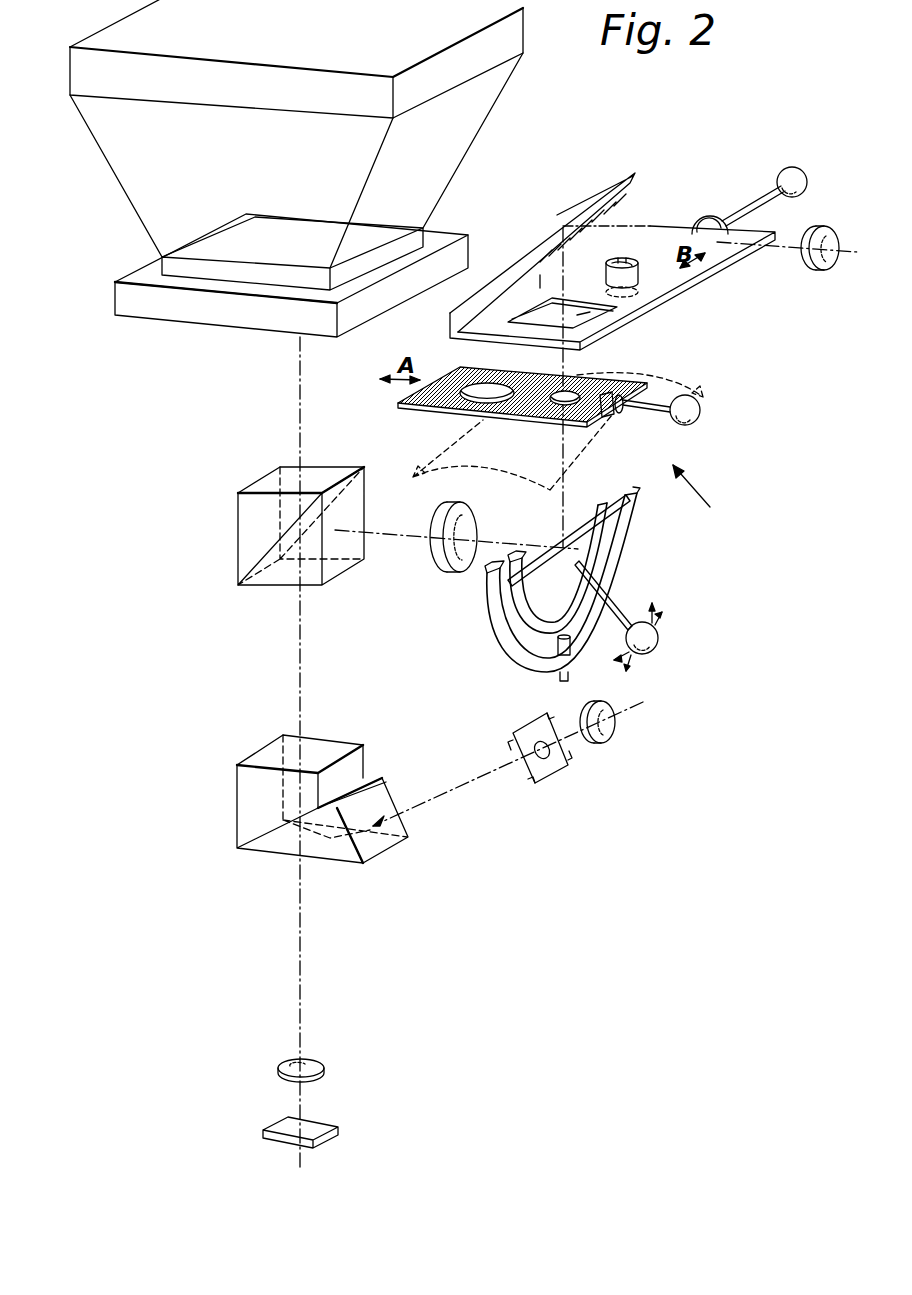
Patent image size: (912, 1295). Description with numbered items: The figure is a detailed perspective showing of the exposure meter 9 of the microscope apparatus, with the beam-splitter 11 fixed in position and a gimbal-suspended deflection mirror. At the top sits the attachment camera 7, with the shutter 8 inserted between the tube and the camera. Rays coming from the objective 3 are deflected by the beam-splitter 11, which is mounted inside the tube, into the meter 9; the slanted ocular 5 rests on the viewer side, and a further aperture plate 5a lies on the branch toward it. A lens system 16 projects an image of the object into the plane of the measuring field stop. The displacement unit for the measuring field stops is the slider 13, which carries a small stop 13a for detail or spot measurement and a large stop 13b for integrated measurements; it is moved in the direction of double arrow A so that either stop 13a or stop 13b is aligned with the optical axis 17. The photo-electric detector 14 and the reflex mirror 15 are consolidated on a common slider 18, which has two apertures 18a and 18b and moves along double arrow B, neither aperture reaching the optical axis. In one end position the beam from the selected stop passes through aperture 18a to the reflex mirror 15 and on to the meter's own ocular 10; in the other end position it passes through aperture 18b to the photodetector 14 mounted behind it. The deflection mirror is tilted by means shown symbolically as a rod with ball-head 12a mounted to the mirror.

The objective 3 is at (322, 1063).
The slanted ocular 5 is at (602, 747).
The aperture plate 5a is at (547, 772).
The attachment camera 7 is at (455, 72).
The shutter 8 is at (232, 312).
The exposure meter 9 is at (700, 500).
The ocular 10 is at (822, 270).
The beam-splitter 11 is at (257, 530).
The rod with ball-head 12a is at (653, 658).
The displacement unit 13 is at (540, 398).
The small stop 13a is at (573, 405).
The large stop 13b is at (477, 395).
The photo-electric detector 14 is at (640, 275).
The reflex mirror 15 is at (543, 240).
The lens system 16 is at (453, 577).
The optical axis 17 is at (563, 518).
The slider 18 is at (662, 243).
The aperture 18a is at (577, 315).
The aperture 18b is at (627, 292).